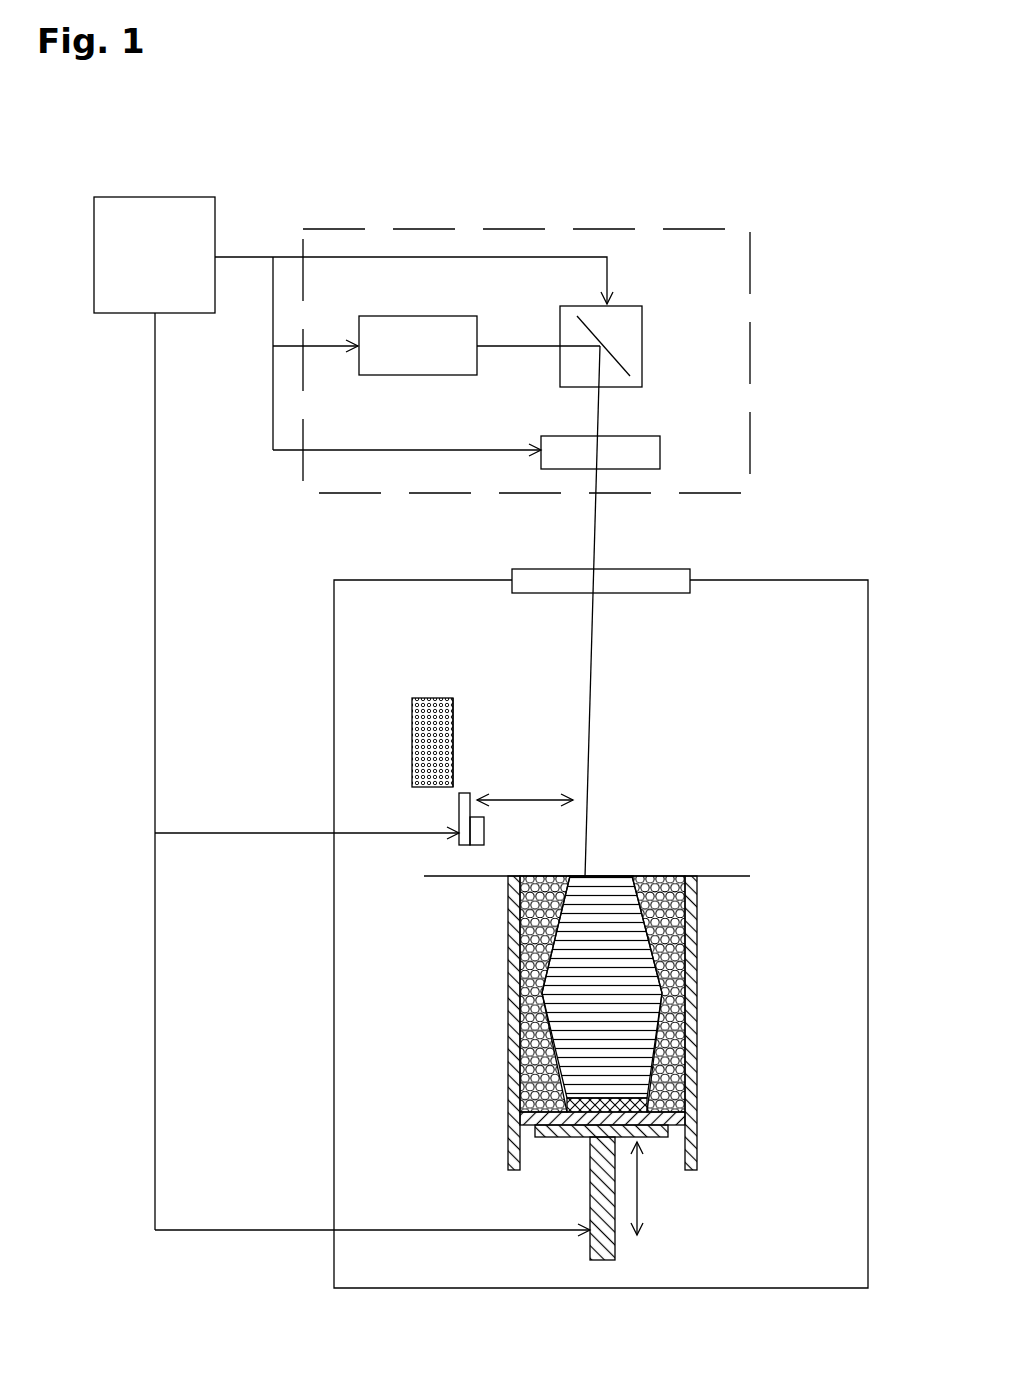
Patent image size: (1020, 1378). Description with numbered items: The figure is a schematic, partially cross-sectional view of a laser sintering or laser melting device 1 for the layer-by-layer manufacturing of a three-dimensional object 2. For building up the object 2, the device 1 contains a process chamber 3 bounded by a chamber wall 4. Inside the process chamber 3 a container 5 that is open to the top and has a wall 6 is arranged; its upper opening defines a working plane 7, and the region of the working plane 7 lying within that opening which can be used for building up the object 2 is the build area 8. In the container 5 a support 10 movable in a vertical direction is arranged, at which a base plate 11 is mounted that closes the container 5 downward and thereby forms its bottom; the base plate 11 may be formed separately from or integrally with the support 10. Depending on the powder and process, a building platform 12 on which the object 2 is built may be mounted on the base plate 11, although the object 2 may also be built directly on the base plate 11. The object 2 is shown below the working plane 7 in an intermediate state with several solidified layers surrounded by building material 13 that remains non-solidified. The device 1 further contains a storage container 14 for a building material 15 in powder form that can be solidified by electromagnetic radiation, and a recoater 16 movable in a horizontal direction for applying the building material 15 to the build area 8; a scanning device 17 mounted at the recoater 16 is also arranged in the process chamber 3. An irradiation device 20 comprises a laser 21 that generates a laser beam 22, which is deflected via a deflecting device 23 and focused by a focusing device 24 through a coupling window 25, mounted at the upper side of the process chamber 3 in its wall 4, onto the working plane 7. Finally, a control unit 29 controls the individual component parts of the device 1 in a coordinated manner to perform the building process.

The laser sintering or laser melting device 1 is at (490, 693).
The object 2 is at (618, 938).
The process chamber 3 is at (430, 628).
The chamber wall 4 is at (334, 1073).
The container 5 is at (597, 1023).
The wall 6 is at (697, 1025).
The working plane 7 is at (750, 875).
The build area 8 is at (660, 875).
The support 10 is at (580, 1130).
The base plate 11 is at (540, 1118).
The building platform 12 is at (567, 1105).
The building material 13 is at (542, 921).
The storage container 14 is at (430, 697).
The building material 15 is at (455, 742).
The recoater 16 is at (465, 818).
The scanning device 17 is at (468, 832).
The irradiation device 20 is at (750, 345).
The laser 21 is at (418, 369).
The laser beam 22 is at (500, 346).
The deflecting device 23 is at (630, 316).
The focusing device 24 is at (632, 447).
The coupling window 25 is at (637, 580).
The control unit 29 is at (353, 716).